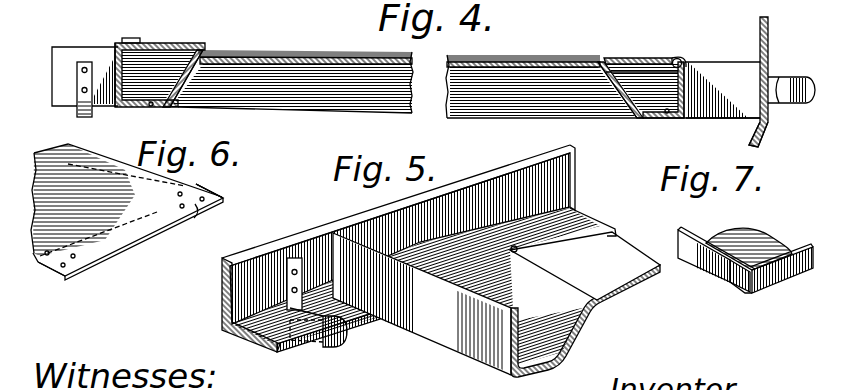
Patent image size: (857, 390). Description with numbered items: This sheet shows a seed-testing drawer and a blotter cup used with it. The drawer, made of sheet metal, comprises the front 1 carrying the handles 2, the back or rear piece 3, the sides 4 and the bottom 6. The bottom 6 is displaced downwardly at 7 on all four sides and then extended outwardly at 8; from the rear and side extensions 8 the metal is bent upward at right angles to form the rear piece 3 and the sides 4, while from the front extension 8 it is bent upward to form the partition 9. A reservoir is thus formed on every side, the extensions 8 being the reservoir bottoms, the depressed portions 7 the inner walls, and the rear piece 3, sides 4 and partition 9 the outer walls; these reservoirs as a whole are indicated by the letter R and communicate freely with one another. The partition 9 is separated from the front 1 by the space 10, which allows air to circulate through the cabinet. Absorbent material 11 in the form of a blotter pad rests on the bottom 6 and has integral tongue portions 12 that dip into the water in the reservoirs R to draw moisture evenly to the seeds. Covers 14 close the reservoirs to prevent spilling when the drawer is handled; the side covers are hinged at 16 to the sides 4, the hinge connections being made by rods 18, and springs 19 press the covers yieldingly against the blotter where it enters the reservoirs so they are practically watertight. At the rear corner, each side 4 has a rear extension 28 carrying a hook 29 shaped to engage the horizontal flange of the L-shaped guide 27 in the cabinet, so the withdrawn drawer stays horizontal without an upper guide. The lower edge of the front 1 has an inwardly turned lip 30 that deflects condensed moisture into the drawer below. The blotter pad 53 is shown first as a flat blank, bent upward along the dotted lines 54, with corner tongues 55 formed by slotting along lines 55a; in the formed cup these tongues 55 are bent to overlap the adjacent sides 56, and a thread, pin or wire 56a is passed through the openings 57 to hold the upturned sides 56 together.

In FIG. 4, the front 1 is at (760, 34).
In FIG. 4, the handles 2 is at (790, 78).
In FIG. 4, the back or rear piece 3 is at (113, 72).
In FIG. 5, the back or rear piece 3 is at (422, 304).
In FIG. 5, the side 4 is at (455, 200).
In FIG. 4, the bottom 6 is at (315, 56).
In FIG. 5, the bottom 6 is at (622, 268).
In FIG. 4, the downwardly displaced portion 7 is at (233, 57).
In FIG. 5, the downwardly displaced portion 7 is at (575, 310).
In FIG. 4, the extension 8 is at (149, 107).
In FIG. 5, the extension 8 is at (519, 250).
In FIG. 4, the partition 9 is at (687, 97).
In FIG. 4, the space 10 is at (718, 72).
In FIG. 4, the absorbent material 11 is at (538, 62).
In FIG. 4, the tongue portions 12 is at (179, 72).
In FIG. 4, the covers 14 is at (152, 62).
In FIG. 4, the hinge 16 is at (116, 62).
In FIG. 4, the rods 18 is at (678, 59).
In FIG. 4, the springs 19 is at (131, 38).
In FIG. 5, the guides 27 is at (260, 332).
In FIG. 4, the rear extension 28 is at (62, 53).
In FIG. 5, the rear extension 28 is at (308, 250).
In FIG. 4, the hook 29 is at (77, 95).
In FIG. 5, the hook 29 is at (312, 318).
In FIG. 4, the lip 30 is at (760, 136).
In FIG. 6, the blotter pad 53 is at (126, 203).
In FIG. 7, the blotter pad 53 is at (757, 237).
In FIG. 6, the dotted lines 54 is at (46, 160).
In FIG. 6, the tongues 55 is at (212, 197).
In FIG. 7, the tongues 55 is at (737, 272).
In FIG. 6, the slotting lines 55a is at (60, 158).
In FIG. 6, the sides 56 is at (120, 237).
In FIG. 7, the sides 56 is at (707, 253).
In FIG. 7, the thread, pin or wire 56a is at (748, 291).
In FIG. 6, the openings 57 is at (190, 210).
In FIG. 4, the reservoirs R is at (643, 72).